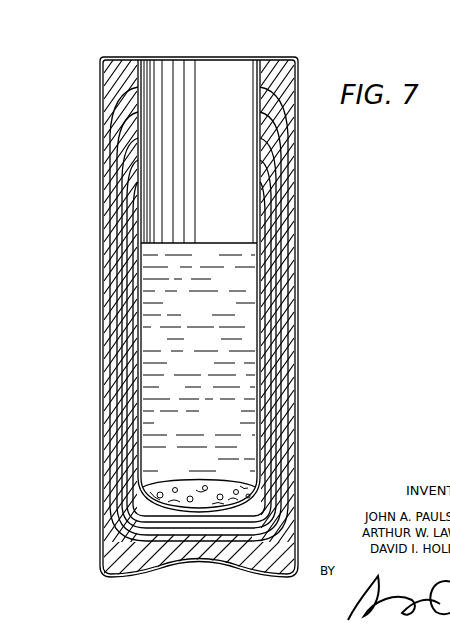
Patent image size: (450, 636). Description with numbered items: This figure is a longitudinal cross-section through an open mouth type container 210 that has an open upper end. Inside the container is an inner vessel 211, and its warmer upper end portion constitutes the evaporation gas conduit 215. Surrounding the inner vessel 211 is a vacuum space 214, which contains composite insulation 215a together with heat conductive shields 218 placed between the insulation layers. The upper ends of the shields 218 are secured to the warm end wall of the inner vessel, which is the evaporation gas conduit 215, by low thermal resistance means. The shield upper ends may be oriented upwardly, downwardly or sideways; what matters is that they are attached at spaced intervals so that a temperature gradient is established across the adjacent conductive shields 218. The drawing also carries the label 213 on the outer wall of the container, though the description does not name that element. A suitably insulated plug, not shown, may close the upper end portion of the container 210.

The open mouth type container 210 is at (299, 194).
The inner vessel 211 is at (249, 288).
The outer wall layer 213 is at (99, 421).
The vacuum space 214 is at (102, 285).
The evaporation gas conduit 215 is at (259, 73).
The composite insulation 215a is at (112, 529).
The heat conductive shields 218 is at (268, 412).